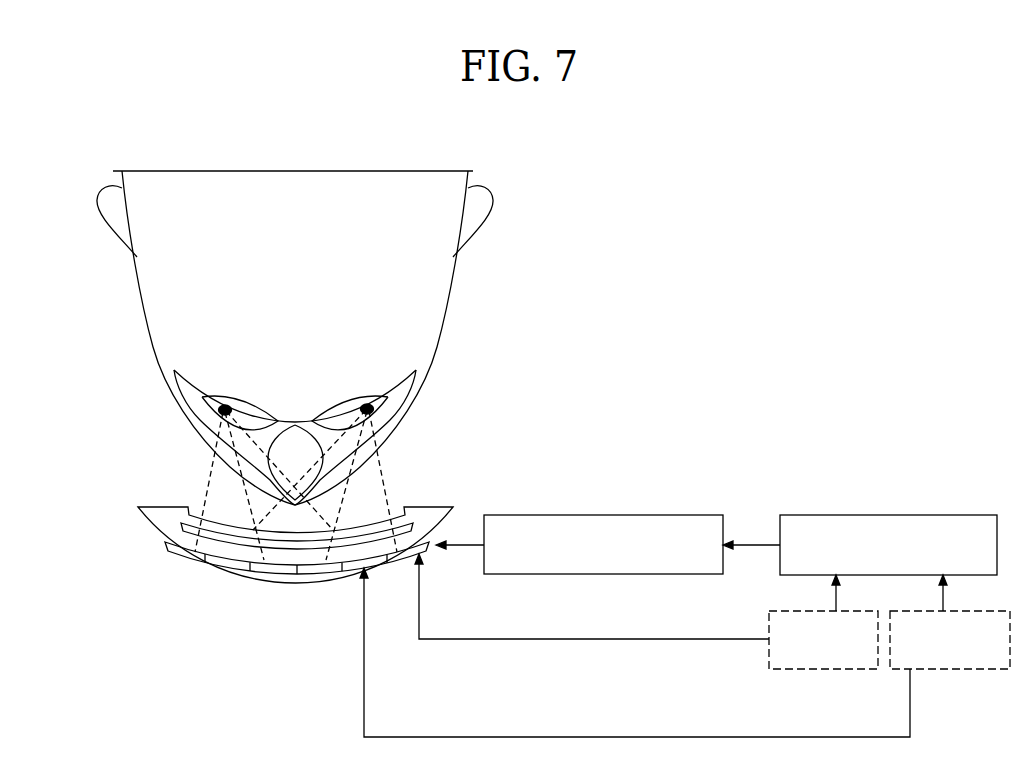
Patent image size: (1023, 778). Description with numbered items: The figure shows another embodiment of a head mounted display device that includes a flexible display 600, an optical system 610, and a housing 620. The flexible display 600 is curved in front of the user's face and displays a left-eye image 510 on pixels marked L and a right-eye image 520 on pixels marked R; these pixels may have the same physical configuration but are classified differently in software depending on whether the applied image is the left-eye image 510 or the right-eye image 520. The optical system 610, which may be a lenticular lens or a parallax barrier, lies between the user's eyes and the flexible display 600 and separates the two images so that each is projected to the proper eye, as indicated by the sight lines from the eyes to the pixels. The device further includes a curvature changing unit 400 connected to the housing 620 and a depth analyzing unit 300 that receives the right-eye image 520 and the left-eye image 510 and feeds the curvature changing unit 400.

The flexible display 600 is at (193, 563).
The optical system 610 is at (184, 532).
The housing 620 is at (428, 507).
The curvature changing unit 400 is at (604, 515).
The depth analyzing unit 300 is at (891, 515).
The right-eye image 520 is at (856, 670).
The left-eye image 510 is at (946, 670).